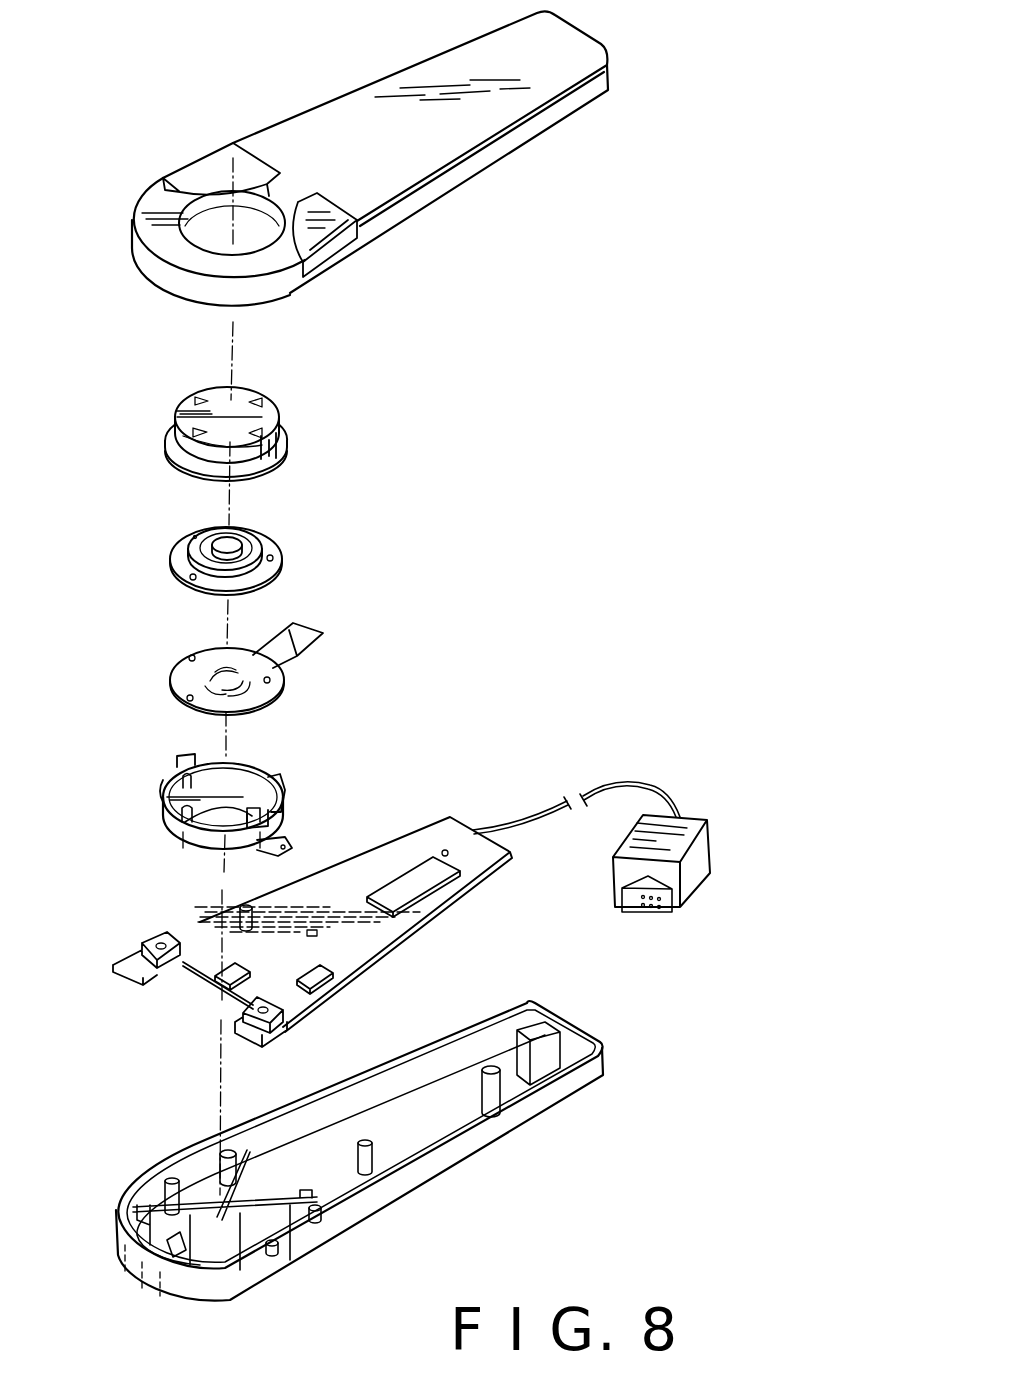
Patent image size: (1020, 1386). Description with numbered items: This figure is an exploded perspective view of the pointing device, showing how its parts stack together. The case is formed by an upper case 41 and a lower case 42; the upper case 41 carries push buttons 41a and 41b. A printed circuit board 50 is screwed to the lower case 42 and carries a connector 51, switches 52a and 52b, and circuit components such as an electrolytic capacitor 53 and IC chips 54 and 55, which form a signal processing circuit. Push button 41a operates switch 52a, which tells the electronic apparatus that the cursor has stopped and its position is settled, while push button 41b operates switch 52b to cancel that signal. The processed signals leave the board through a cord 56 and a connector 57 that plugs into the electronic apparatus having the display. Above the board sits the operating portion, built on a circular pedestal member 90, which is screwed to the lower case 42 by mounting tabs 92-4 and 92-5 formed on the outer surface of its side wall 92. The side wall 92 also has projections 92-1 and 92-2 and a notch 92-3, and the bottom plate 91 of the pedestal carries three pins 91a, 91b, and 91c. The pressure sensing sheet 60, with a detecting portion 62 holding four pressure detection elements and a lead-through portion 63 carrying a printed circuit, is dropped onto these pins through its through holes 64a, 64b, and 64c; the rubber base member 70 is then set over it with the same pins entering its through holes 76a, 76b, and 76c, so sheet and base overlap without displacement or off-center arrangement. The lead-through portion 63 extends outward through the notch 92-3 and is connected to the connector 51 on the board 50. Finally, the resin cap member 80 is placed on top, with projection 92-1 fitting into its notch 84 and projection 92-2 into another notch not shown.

The upper case 41 is at (517, 110).
The push button 41a is at (333, 247).
The push button 41b is at (190, 170).
The cap member 80 is at (307, 424).
The notch 84 is at (273, 460).
The base member 70 is at (300, 575).
The through hole 76a is at (273, 556).
The through hole 76b is at (195, 537).
The through hole 76c is at (190, 577).
The pressure sensing sheet 60 is at (294, 697).
The detecting portion 62 is at (173, 663).
The lead-through portion 63 is at (327, 633).
The through hole 64a is at (271, 681).
The through hole 64b is at (192, 656).
The through hole 64c is at (187, 698).
The pedestal member 90 is at (312, 797).
The bottom plate 91 is at (240, 765).
The pin 91a is at (228, 853).
The pin 91b is at (196, 760).
The pin 91c is at (172, 842).
The side wall 92 is at (160, 812).
The projection 92-1 is at (268, 815).
The projection 92-2 is at (176, 756).
The notch 92-3 is at (286, 772).
The mounting tab 92-4 is at (238, 915).
The mounting tab 92-5 is at (162, 785).
The electrolytic capacitor 53 is at (282, 850).
The printed circuit board 50 is at (504, 885).
The connector 51 is at (217, 975).
The switch 52a is at (287, 1012).
The switch 52b is at (137, 977).
The IC chip 54 is at (333, 971).
The IC chip 55 is at (412, 887).
The cord 56 is at (510, 828).
The connector 57 is at (693, 893).
The lower case 42 is at (567, 1090).